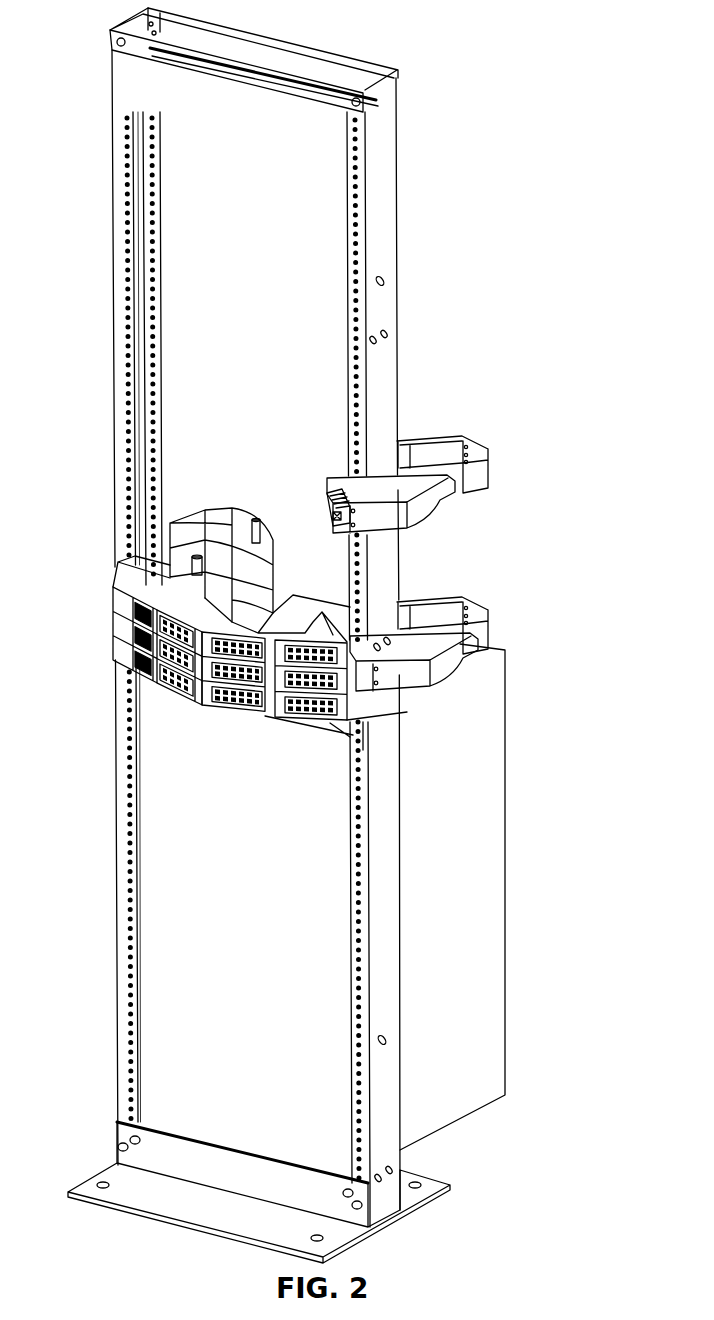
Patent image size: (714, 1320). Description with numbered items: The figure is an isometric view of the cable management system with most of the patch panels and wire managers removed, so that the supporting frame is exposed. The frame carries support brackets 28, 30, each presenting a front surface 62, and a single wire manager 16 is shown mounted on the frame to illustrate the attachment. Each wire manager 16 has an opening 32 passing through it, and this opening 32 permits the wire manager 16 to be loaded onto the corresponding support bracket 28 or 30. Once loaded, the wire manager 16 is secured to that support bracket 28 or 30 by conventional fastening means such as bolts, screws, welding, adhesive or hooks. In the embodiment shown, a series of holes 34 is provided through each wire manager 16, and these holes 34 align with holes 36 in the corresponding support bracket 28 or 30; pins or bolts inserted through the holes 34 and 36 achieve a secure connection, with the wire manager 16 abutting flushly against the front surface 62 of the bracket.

The wire manager 16 is at (506, 447).
The support bracket 28 is at (387, 197).
The support bracket 30 is at (112, 182).
The opening 32 is at (475, 506).
The holes 34 is at (338, 516).
The holes 36 is at (352, 390).
The front surface 62 is at (124, 223).